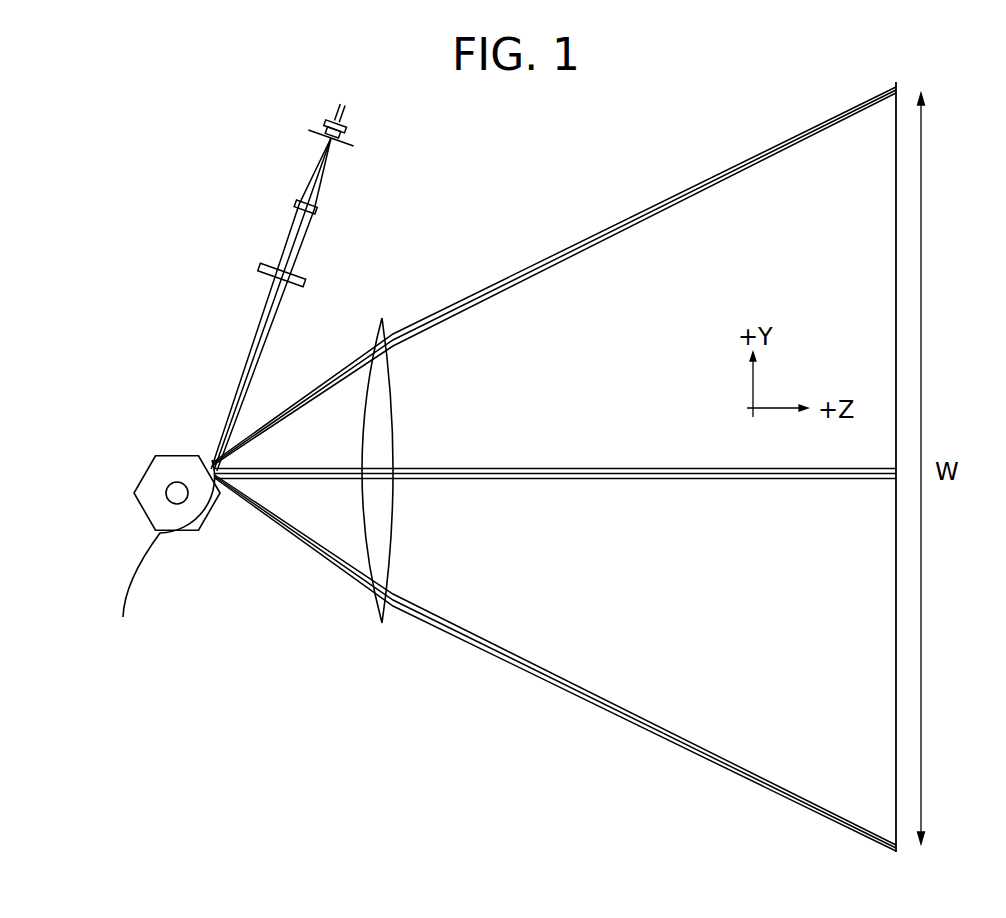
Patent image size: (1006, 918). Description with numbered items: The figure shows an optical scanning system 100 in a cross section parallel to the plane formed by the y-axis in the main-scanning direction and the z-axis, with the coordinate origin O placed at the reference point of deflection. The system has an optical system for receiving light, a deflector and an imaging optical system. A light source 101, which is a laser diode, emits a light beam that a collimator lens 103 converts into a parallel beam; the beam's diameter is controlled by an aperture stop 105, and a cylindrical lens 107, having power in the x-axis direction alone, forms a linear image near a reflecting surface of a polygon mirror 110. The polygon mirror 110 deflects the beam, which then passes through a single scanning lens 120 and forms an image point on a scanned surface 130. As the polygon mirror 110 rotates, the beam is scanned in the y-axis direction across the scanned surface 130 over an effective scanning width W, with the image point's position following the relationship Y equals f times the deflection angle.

The optical scanning system 100 is at (995, 92).
The light source 101 is at (346, 133).
The collimator lens 103 is at (293, 207).
The aperture stop 105 is at (295, 223).
The cylindrical lens 107 is at (257, 268).
The polygon mirror 110 is at (167, 476).
The scanning lens 120 is at (378, 440).
The scanned surface 130 is at (893, 550).